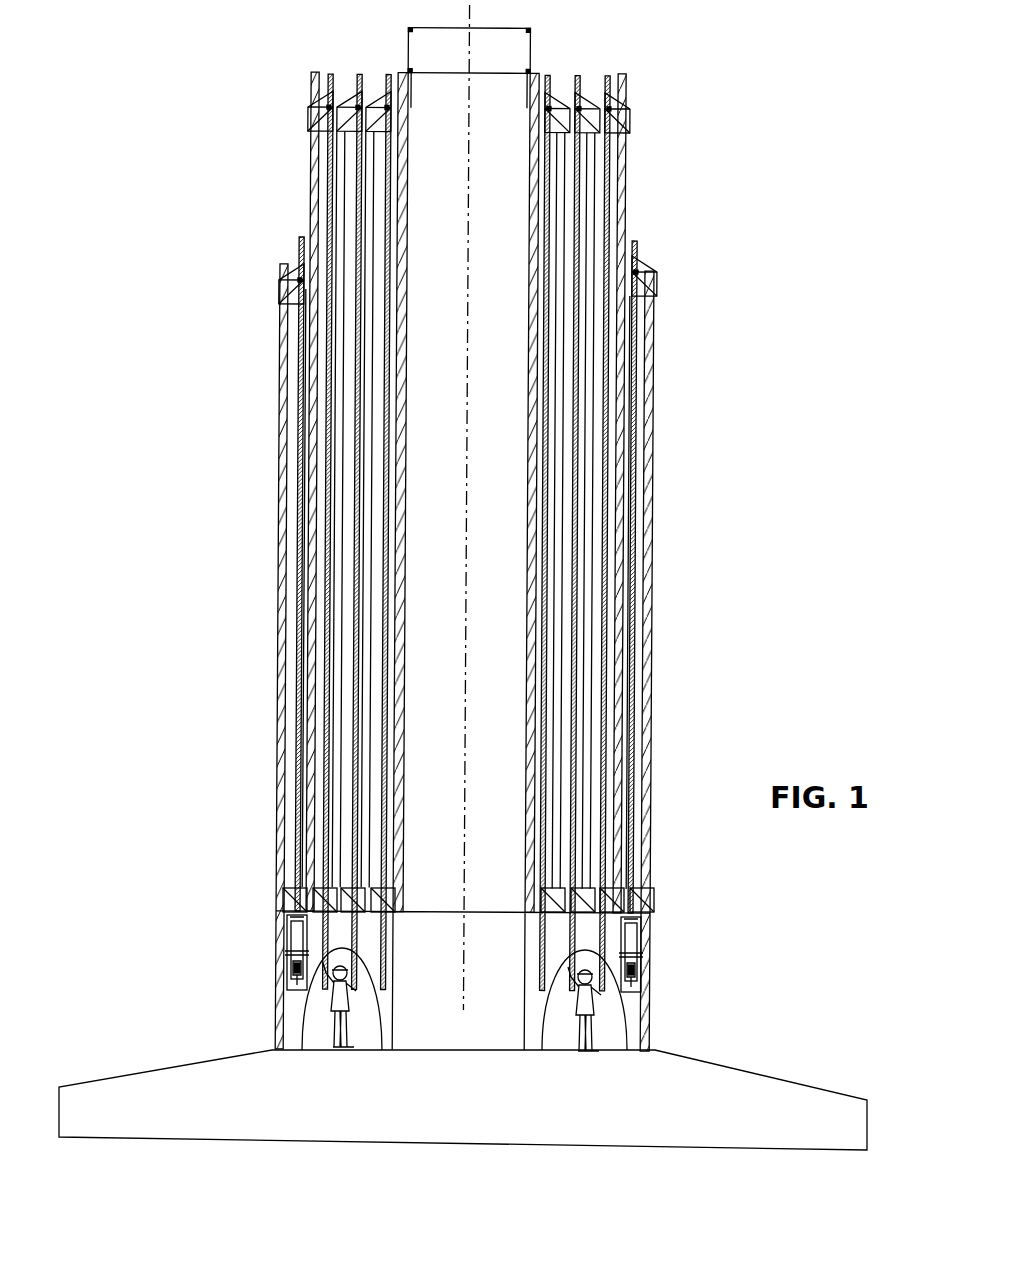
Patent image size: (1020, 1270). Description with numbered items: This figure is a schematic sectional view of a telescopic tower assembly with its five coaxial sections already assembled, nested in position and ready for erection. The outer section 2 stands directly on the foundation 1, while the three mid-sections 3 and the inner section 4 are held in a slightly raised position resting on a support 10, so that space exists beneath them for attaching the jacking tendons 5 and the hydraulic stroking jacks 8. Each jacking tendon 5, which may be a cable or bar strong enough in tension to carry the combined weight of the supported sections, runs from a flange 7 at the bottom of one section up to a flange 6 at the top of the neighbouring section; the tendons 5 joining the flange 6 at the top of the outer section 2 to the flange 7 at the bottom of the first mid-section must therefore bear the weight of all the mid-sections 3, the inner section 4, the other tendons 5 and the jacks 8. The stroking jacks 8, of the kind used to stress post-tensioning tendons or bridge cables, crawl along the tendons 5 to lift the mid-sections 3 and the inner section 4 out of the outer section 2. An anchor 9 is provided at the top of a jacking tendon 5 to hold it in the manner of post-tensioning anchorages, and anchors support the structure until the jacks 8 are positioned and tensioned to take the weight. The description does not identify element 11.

The foundation 1 is at (785, 1100).
The outer section 2 is at (655, 540).
The mid-sections 3 is at (622, 195).
The inner section 4 is at (545, 75).
The jacking tendons 5 is at (636, 447).
The flange 6 is at (622, 120).
The flange 7 is at (638, 903).
The hydraulic stroking jacks 8 is at (290, 937).
The anchor 9 is at (640, 262).
The support 10 is at (296, 1022).
The left outer bracket 11 is at (303, 268).